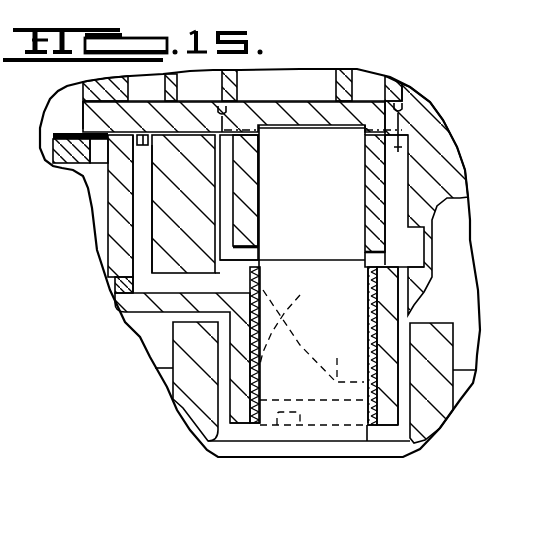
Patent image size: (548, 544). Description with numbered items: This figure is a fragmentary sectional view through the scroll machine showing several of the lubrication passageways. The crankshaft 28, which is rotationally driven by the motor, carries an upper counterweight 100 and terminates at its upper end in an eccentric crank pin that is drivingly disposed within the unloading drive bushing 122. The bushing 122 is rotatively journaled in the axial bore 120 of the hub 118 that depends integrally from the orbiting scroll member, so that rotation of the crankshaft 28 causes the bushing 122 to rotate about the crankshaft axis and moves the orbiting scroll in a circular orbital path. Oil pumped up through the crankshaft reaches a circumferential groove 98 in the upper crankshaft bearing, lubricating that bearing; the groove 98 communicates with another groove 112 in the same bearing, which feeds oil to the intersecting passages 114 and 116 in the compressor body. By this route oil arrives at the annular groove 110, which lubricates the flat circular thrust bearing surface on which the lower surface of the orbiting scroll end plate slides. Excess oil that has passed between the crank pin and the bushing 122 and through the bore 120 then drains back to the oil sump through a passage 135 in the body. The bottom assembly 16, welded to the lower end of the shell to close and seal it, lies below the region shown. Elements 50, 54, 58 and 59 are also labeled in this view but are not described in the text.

The bottom assembly 16 is at (417, 137).
The crankshaft 28 is at (317, 443).
The housing block 50 is at (199, 185).
The upper housing body 54 is at (435, 114).
The seal 58 is at (57, 163).
The threaded connection 59 is at (255, 418).
The circumferential groove 98 is at (313, 382).
The upper counterweight 100 is at (428, 427).
The annular groove 110 is at (122, 103).
The groove 112 is at (312, 328).
The passage 114 is at (167, 283).
The passage 116 is at (140, 220).
The hub 118 is at (375, 180).
The axial bore 120 is at (260, 187).
The unloading drive bushing 122 is at (334, 225).
The passage 135 is at (428, 278).